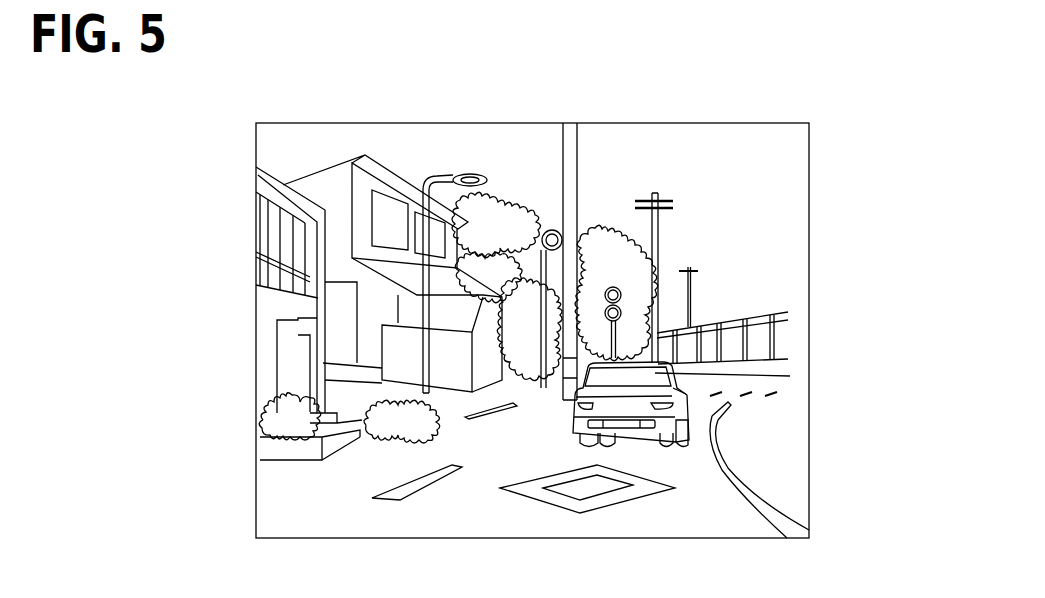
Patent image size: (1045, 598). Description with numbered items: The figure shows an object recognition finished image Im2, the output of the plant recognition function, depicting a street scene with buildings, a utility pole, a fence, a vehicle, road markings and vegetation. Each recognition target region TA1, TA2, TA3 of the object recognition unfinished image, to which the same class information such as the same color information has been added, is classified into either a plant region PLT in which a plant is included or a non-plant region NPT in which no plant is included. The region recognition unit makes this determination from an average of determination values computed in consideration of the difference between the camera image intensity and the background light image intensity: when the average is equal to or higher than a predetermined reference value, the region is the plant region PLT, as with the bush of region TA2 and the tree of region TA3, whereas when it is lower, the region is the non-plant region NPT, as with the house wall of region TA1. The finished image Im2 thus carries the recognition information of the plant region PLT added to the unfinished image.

The object recognition finished image Im2 is at (260, 113).
The recognition target region TA1 is at (388, 343).
The non-plant region NPT is at (293, 311).
The recognition target region TA2 is at (387, 427).
The recognition target region TA3 is at (600, 271).
The plant region PLT is at (531, 348).